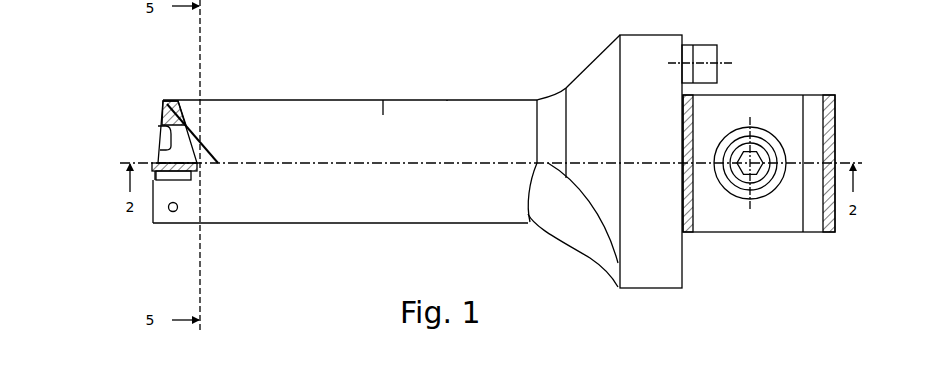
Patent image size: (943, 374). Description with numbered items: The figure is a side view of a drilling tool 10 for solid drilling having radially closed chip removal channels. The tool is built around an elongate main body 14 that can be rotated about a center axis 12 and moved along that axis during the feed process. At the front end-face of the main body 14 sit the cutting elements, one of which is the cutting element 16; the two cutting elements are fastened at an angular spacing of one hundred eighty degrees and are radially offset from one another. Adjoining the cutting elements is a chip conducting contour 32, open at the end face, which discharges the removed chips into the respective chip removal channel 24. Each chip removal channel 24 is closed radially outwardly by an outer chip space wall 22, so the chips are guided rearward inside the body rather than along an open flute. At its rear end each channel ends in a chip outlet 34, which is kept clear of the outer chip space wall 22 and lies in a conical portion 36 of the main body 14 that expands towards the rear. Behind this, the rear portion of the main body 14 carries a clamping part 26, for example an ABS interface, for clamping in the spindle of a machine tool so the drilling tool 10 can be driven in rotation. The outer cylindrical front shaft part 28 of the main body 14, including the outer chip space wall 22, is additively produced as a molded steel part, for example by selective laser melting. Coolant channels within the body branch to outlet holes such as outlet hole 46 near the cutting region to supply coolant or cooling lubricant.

The drilling tool 10 is at (291, 97).
The center axis 12 is at (317, 163).
The main body 14 is at (447, 100).
The cutting element 16 is at (158, 163).
The outer chip space wall 22 is at (383, 100).
The chip removal channel 24 is at (166, 100).
The clamping part 26 is at (752, 93).
The front shaft part 28 is at (177, 223).
The chip conducting contour 32 is at (218, 163).
The chip outlet 34 is at (568, 207).
The conical portion 36 is at (575, 80).
The outlet hole 46 is at (158, 127).